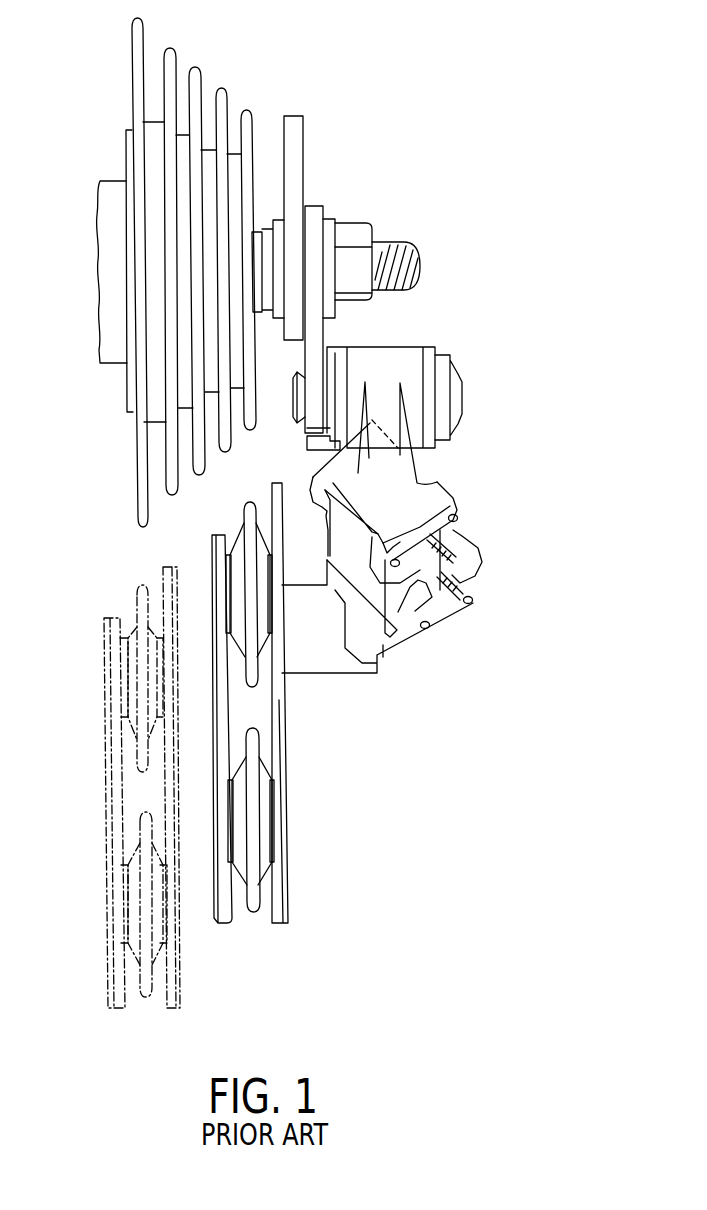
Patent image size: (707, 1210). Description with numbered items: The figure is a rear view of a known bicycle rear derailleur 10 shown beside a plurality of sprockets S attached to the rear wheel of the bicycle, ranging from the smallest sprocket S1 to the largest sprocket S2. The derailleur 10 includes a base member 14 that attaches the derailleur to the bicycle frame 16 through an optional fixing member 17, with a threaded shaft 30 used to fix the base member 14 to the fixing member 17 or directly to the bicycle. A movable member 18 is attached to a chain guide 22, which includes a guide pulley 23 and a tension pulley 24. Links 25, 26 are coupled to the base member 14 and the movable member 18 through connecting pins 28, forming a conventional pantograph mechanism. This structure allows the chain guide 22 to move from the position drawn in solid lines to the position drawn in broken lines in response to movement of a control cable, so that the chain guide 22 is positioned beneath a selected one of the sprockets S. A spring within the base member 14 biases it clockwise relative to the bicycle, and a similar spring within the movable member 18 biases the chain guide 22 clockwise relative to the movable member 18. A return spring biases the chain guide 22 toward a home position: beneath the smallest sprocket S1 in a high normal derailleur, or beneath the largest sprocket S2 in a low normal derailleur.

The sprockets S is at (101, 49).
The smallest sprocket S1 is at (252, 402).
The largest sprocket S2 is at (135, 491).
The bicycle rear derailleur 10 is at (516, 380).
The base member 14 is at (423, 360).
The bicycle frame 16 is at (297, 158).
The fixing member 17 is at (330, 341).
The movable member 18 is at (382, 645).
The chain guide 22 is at (285, 798).
The guide pulley 23 is at (244, 530).
The tension pulley 24 is at (262, 870).
The link 25 is at (330, 508).
The link 26 is at (440, 478).
The connecting pins 28 is at (458, 518).
The threaded shaft 30 is at (298, 427).